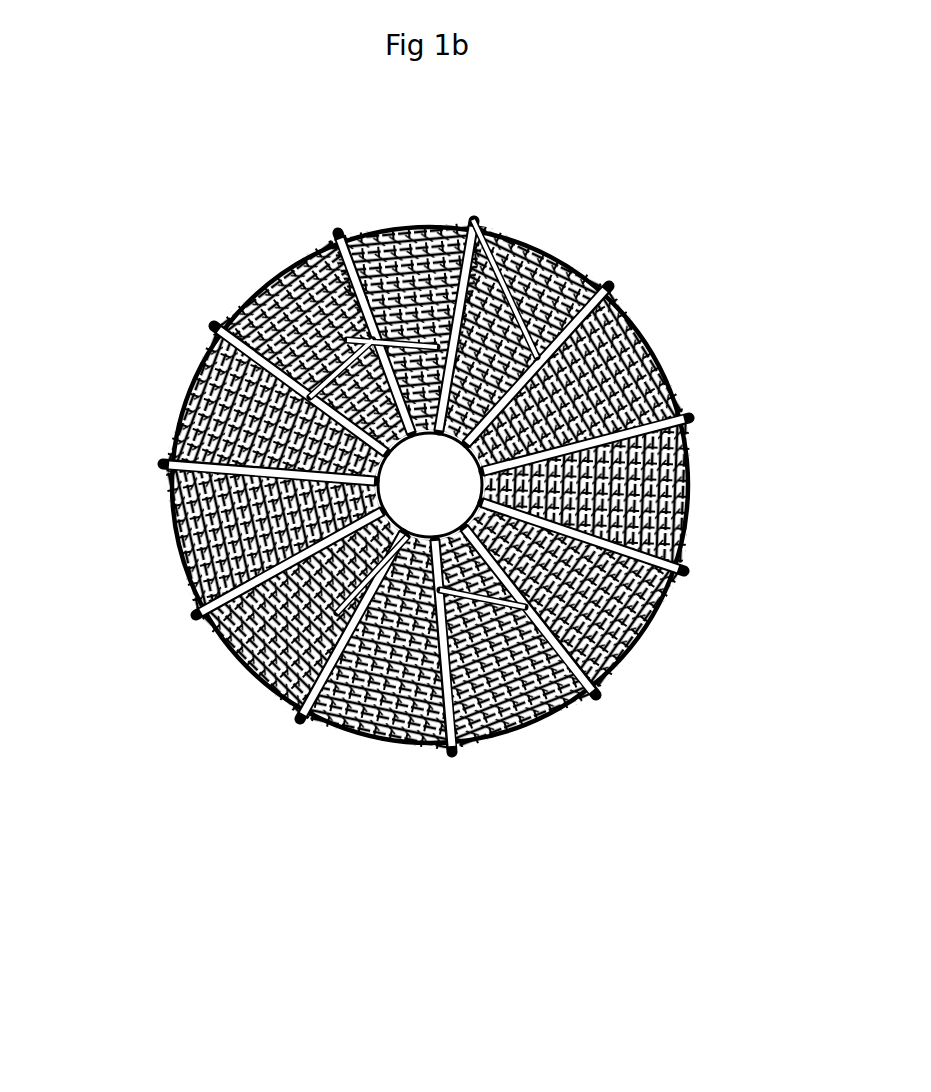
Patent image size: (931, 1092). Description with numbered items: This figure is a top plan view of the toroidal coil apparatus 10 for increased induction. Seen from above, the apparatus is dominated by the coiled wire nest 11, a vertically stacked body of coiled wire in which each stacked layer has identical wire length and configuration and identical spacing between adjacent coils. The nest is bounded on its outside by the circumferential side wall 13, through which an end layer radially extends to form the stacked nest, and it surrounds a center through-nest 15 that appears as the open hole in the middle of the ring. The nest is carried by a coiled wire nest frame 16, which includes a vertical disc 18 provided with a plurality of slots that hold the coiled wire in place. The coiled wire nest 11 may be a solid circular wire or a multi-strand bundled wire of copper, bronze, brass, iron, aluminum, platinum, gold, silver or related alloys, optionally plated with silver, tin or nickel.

The toroidal coil apparatus 10 is at (365, 760).
The coiled wire nest 11 is at (297, 348).
The circumferential side wall 13 is at (690, 532).
The center through-nest 15 is at (459, 461).
The coiled wire nest frame 16 is at (350, 607).
The vertical disc 18 is at (168, 458).